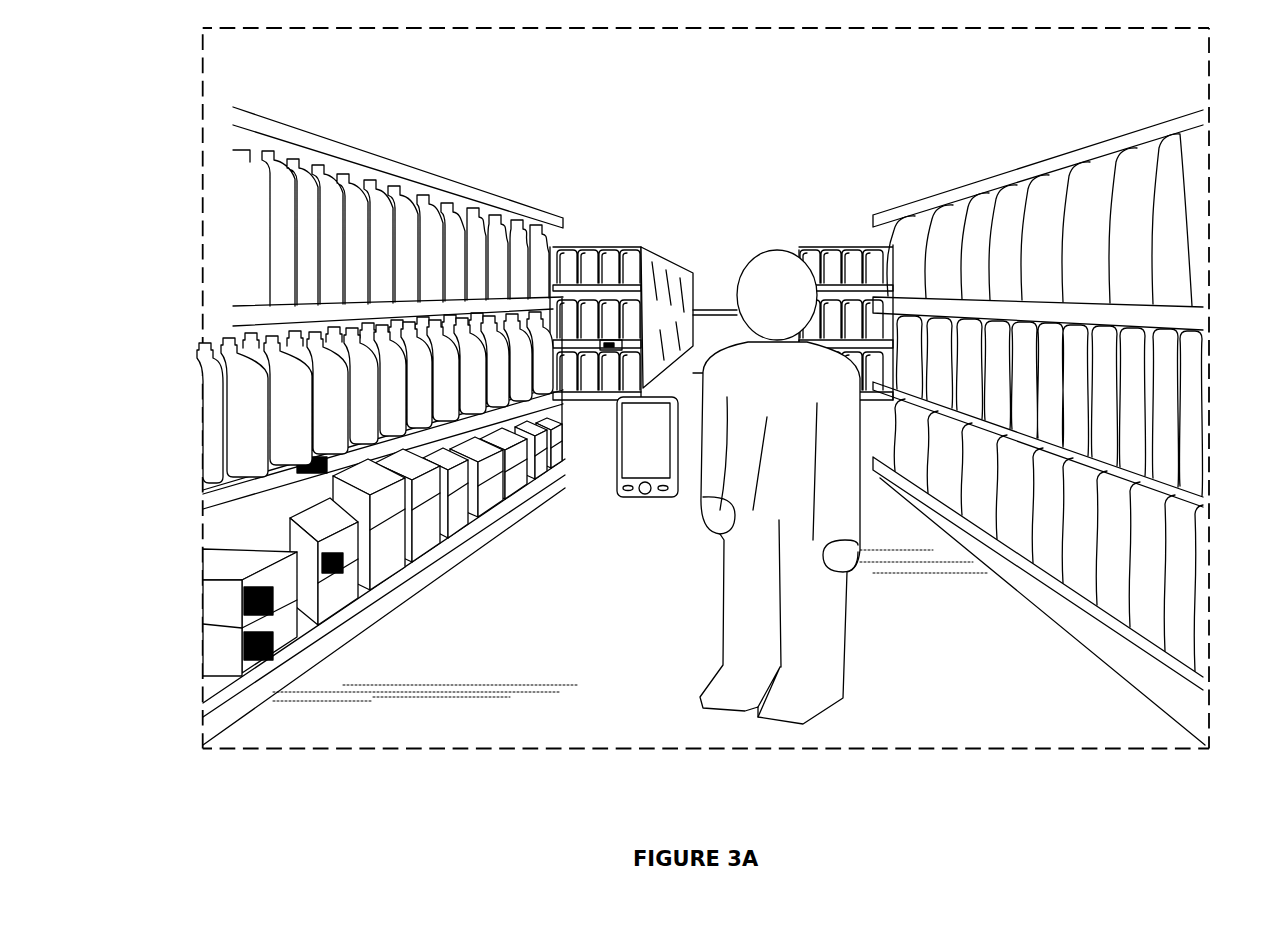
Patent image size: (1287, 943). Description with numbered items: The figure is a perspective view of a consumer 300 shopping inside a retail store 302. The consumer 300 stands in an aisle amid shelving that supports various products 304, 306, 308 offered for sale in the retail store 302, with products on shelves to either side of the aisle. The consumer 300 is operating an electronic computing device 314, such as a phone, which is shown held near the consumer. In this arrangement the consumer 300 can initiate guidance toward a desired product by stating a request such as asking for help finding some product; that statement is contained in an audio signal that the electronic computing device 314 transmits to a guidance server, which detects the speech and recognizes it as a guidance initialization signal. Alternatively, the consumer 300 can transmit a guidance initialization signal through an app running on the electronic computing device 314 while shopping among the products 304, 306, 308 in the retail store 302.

The consumer 300 is at (753, 510).
The retail store 302 is at (721, 179).
The products 304 is at (237, 560).
The products 306 is at (947, 250).
The products 308 is at (405, 222).
The electronic computing device 314 is at (647, 447).